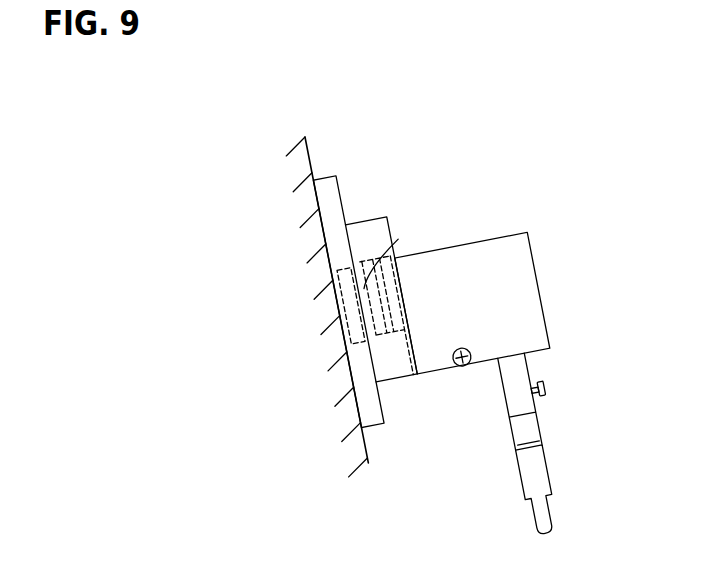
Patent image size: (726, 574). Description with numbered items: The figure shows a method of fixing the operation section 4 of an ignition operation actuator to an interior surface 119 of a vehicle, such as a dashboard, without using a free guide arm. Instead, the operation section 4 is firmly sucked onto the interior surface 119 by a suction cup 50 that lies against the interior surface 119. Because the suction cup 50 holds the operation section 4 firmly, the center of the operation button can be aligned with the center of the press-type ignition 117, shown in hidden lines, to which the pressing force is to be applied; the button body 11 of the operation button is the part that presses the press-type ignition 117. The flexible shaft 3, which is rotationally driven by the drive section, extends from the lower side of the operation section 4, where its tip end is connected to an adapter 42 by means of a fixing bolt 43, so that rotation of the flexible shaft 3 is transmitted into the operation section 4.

The interior surface 119 is at (306, 150).
The suction cup 50 is at (330, 193).
The press-type ignition 117 is at (335, 300).
The button body 11 is at (399, 239).
The operation section 4 is at (491, 237).
The adapter 42 is at (527, 368).
The fixing bolt 43 is at (546, 389).
The flexible shaft 3 is at (575, 514).